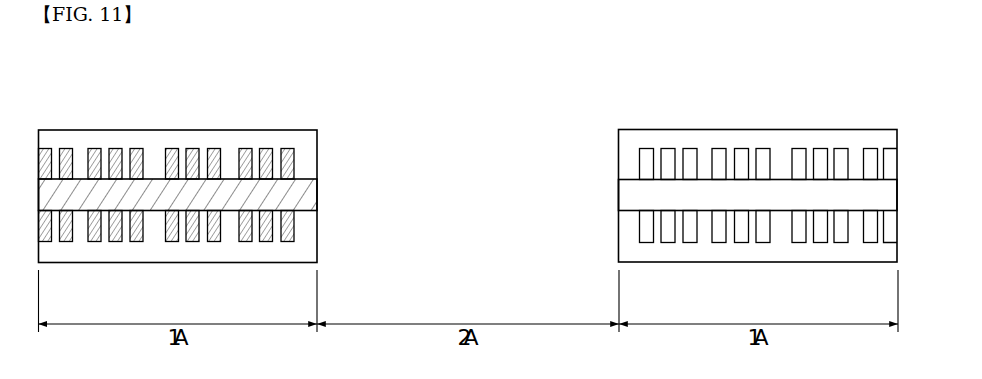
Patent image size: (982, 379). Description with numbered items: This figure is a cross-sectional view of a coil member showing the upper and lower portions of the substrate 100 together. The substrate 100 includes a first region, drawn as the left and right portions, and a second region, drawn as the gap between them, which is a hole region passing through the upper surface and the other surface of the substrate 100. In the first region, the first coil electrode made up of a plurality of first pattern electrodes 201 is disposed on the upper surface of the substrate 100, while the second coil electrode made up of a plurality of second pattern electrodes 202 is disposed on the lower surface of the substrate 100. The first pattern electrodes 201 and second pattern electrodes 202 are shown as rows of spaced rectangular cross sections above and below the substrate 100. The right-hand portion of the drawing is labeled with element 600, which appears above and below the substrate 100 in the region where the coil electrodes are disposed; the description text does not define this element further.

The first pattern electrodes 201 is at (246, 148).
The second pattern electrodes 202 is at (246, 242).
The encapsulation layer 600 is at (840, 134).
The substrate 100 is at (897, 193).